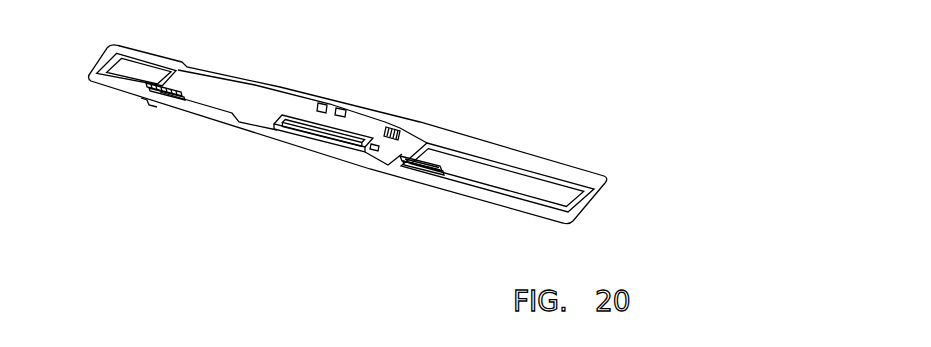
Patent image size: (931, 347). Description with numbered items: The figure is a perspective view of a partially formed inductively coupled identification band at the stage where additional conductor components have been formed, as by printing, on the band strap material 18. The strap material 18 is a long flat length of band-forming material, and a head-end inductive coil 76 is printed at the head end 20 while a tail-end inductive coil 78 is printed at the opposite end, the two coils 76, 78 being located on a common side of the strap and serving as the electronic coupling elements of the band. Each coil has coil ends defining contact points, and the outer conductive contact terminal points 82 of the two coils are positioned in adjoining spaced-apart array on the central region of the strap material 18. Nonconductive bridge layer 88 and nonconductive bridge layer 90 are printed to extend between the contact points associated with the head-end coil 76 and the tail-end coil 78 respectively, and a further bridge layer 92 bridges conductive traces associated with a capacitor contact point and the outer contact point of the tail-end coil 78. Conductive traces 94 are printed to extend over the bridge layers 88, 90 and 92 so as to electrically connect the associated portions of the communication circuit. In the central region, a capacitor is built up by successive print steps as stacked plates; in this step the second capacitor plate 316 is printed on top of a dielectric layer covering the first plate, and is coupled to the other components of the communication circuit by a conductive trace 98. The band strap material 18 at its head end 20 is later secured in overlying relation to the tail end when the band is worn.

The band strap material 18 is at (200, 117).
The head end 20 is at (110, 52).
The head-end inductive coil 76 is at (152, 60).
The tail-end inductive coil 78 is at (552, 170).
The conductive contact terminal points 82 is at (340, 107).
The nonconductive bridge layer 88 is at (167, 102).
The nonconductive bridge layer 90 is at (425, 172).
The bridge layer 92 is at (398, 128).
The conductive traces 94 is at (147, 98).
The conductive trace 98 is at (378, 147).
The second capacitor plate 316 is at (298, 143).